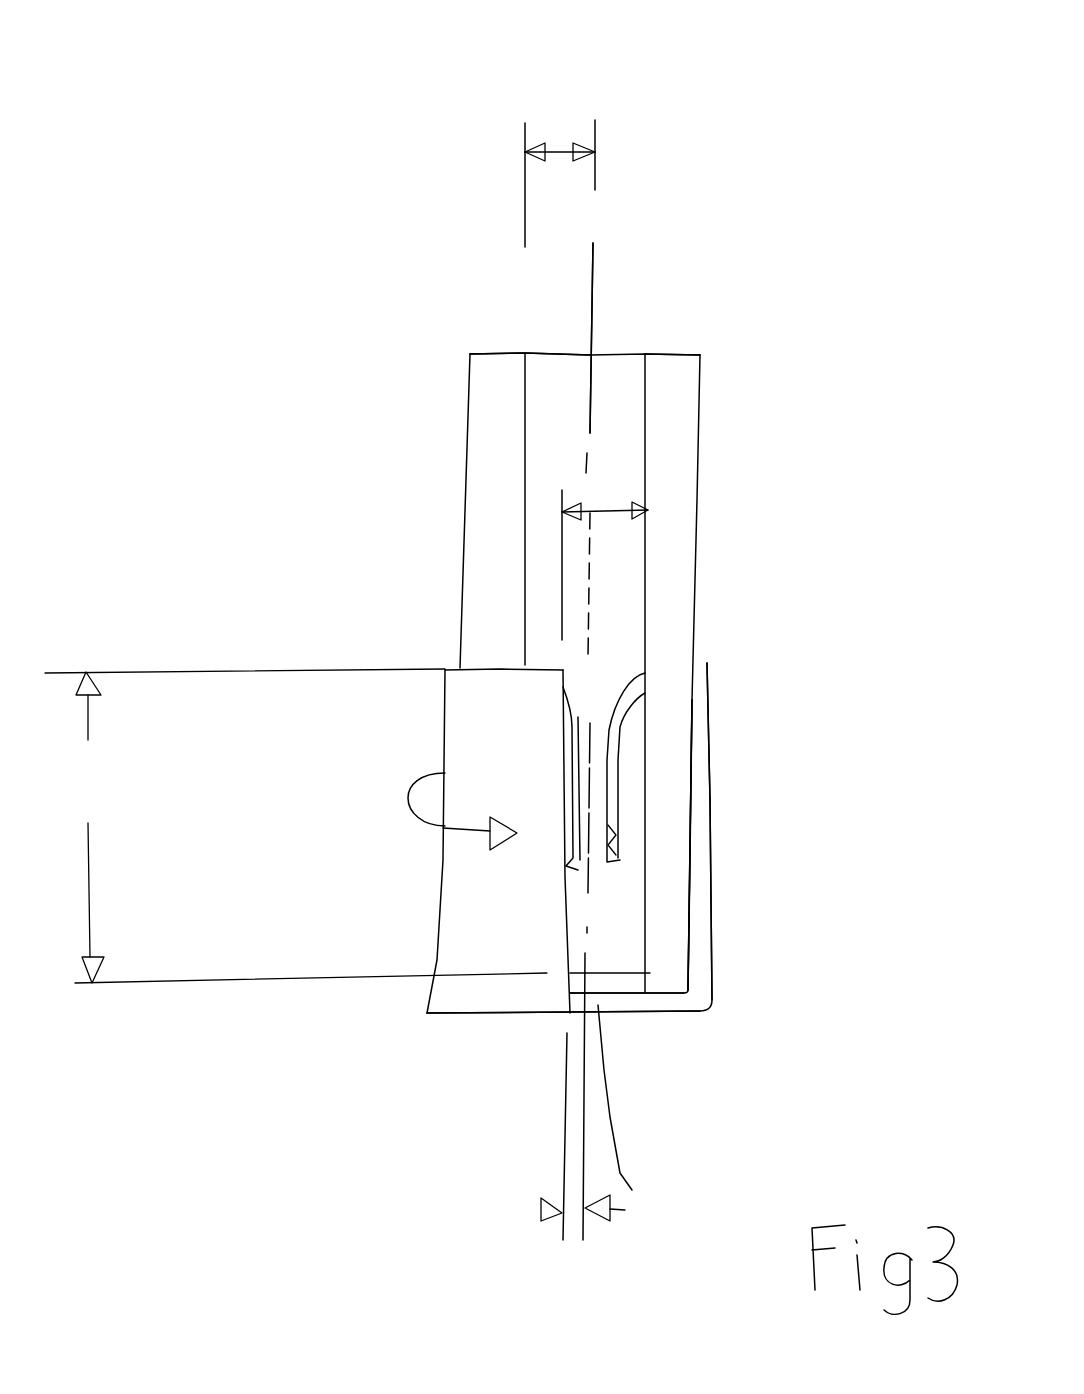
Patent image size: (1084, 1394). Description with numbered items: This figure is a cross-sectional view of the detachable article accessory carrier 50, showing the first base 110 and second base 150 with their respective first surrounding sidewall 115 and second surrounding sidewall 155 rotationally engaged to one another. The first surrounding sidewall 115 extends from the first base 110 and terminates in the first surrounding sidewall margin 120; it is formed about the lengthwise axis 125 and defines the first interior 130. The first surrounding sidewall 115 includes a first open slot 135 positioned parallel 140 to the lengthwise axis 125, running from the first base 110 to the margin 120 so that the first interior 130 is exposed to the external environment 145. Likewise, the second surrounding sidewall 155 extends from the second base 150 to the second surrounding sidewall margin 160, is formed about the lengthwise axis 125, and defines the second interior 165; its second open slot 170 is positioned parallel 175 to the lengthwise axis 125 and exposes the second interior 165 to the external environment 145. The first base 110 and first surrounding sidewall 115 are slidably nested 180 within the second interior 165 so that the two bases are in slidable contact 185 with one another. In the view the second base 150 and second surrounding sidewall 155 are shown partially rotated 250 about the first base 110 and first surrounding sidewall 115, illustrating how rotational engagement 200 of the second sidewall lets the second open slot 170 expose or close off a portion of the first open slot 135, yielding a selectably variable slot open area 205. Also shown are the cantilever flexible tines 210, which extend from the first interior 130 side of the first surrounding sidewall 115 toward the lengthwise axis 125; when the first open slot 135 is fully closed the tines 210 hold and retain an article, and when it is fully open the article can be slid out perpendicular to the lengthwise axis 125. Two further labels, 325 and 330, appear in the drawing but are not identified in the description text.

The detachable article accessory carrier 50 is at (867, 140).
The first base 110 is at (760, 1115).
The first surrounding sidewall 115 is at (675, 385).
The first surrounding sidewall margin 120 is at (493, 351).
The lengthwise axis 125 is at (590, 280).
The first interior 130 is at (622, 438).
The first open slot 135 is at (527, 457).
The parallel positioning of first open slot 140 is at (525, 153).
The external environment 145 is at (910, 68).
The second base 150 is at (640, 1195).
The second surrounding sidewall 155 is at (843, 955).
The second surrounding sidewall margin 160 is at (852, 610).
The second interior 165 is at (710, 713).
The second open slot 170 is at (563, 905).
The parallel positioning of second open slot 175 is at (541, 1212).
The slidably nested arrangement 180 is at (670, 993).
The slidable contact 185 is at (870, 1097).
The rotational engagement 200 is at (816, 731).
The selectably variable slot open area 205 is at (855, 510).
The cantilever flexible tine 210 is at (622, 776).
The partial rotation 250 is at (408, 797).
The flow direction 325 is at (560, 882).
The tube lower wall 330 is at (705, 860).